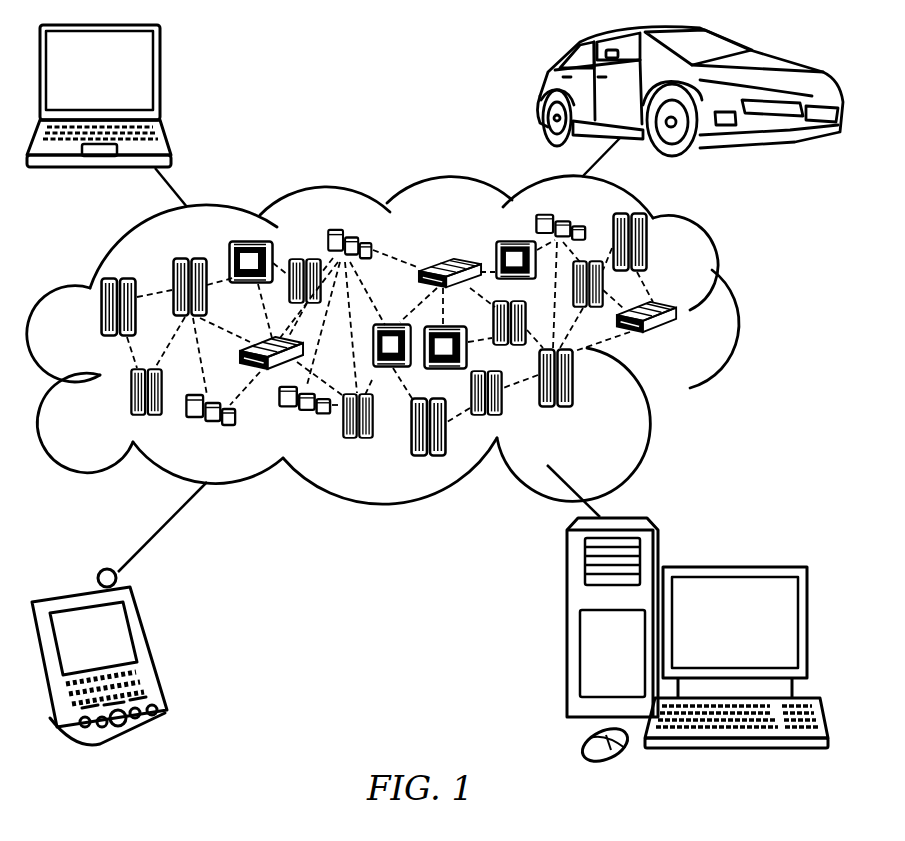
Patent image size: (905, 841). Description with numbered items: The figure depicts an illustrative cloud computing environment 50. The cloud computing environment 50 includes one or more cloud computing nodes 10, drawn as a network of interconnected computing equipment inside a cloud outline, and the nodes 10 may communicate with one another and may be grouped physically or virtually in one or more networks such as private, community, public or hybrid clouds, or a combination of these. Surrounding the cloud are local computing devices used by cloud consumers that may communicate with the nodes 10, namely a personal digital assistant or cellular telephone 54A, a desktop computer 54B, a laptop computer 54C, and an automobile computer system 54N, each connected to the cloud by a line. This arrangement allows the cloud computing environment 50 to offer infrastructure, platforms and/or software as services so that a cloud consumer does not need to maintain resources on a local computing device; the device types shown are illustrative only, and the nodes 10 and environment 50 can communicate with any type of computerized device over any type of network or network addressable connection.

The cloud computing node 10 is at (684, 340).
The cloud computing environment 50 is at (732, 313).
The personal digital assistant or cellular telephone 54A is at (153, 650).
The desktop computer 54B is at (732, 567).
The laptop computer 54C is at (162, 79).
The automobile computer system 54N is at (541, 94).